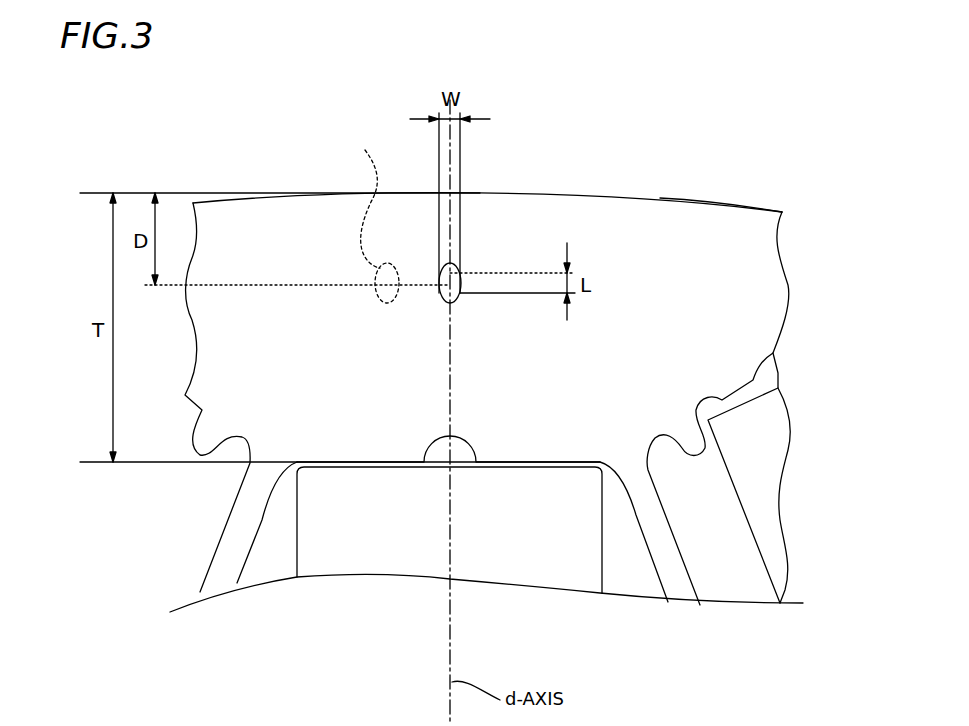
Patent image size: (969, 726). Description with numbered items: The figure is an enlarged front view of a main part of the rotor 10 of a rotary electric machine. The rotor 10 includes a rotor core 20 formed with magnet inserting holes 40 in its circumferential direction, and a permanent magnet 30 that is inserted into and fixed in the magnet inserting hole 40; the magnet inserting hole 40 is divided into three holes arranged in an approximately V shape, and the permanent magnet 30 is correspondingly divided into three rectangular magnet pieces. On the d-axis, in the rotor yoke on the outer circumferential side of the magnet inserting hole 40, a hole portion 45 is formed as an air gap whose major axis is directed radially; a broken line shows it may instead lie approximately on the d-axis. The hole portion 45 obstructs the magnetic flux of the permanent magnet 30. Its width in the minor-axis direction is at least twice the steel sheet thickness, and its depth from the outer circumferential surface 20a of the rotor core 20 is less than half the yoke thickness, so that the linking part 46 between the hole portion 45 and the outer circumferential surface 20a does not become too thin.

The rotor 10 is at (787, 152).
The rotor core 20 is at (643, 198).
The outer circumferential surface of rotor core 20a is at (710, 203).
The permanent magnet 30 is at (385, 563).
The magnet inserting hole 40 is at (528, 463).
The hole portion 45 is at (440, 282).
The linking part 46 is at (483, 220).